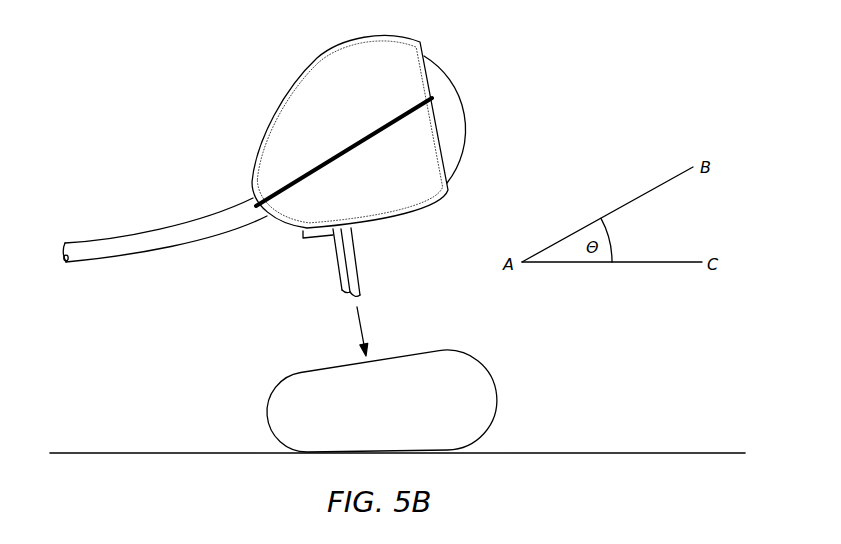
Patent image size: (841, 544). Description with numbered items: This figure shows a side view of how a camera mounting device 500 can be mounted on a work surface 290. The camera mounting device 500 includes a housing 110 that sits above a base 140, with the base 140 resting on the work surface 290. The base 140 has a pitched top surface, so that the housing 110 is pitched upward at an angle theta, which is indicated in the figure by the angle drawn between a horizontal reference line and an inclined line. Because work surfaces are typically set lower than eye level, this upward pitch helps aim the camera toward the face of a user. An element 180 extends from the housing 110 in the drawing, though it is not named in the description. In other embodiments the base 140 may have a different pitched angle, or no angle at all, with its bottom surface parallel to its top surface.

The housing 110 is at (348, 105).
The strap 180 is at (166, 237).
The camera mounting device 500 is at (536, 106).
The base 140 is at (452, 380).
The work surface 290 is at (597, 452).